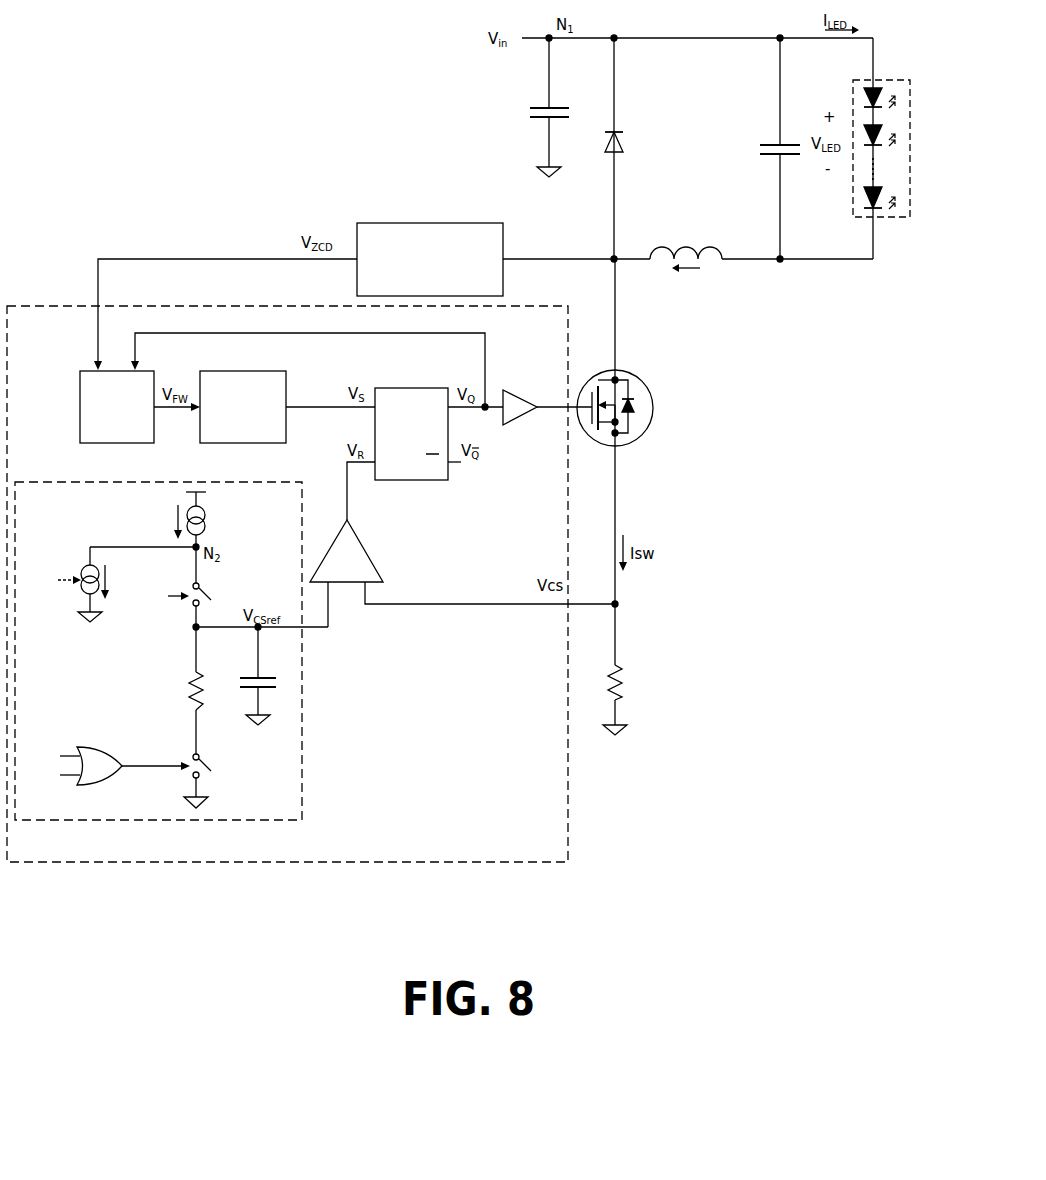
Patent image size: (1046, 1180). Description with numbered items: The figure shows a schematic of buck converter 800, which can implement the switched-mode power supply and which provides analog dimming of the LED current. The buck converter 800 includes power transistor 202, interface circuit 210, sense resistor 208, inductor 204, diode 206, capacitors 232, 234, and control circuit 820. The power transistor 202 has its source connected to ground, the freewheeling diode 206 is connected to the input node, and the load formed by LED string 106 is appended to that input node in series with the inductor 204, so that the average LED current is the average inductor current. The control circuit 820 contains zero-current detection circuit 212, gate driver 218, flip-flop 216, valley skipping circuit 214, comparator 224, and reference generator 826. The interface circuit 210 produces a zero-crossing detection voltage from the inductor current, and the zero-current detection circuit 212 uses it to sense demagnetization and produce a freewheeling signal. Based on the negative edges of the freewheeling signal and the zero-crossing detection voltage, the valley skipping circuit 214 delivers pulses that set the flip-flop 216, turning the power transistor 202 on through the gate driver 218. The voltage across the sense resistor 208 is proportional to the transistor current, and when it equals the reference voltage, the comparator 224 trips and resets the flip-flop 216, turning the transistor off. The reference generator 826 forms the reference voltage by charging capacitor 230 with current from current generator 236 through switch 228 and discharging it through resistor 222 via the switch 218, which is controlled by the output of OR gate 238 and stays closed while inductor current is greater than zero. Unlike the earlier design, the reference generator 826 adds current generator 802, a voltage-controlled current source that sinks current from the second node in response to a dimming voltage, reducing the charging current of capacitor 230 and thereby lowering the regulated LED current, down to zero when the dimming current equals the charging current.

The buck converter 800 is at (153, 92).
The control circuit 820 is at (21, 306).
The reference generator 826 is at (302, 756).
The current generator 802 is at (80, 594).
The LED string 106 is at (884, 80).
The power transistor 202 is at (653, 408).
The inductor 204 is at (722, 252).
The freewheeling diode 206 is at (622, 131).
The sense resistor 208 is at (618, 665).
The interface circuit 210 is at (442, 223).
The zero-current detection circuit 212 is at (132, 443).
The valley skipping circuit 214 is at (237, 371).
The flip-flop 216 is at (405, 388).
The gate driver and switch 218 is at (510, 425).
The resistor 222 is at (190, 675).
The comparator 224 is at (362, 542).
The switch 228 is at (204, 584).
The capacitor 230 is at (262, 677).
The capacitor 232 is at (768, 145).
The capacitor 234 is at (530, 108).
The current generator 236 is at (207, 517).
The OR gate 238 is at (97, 750).